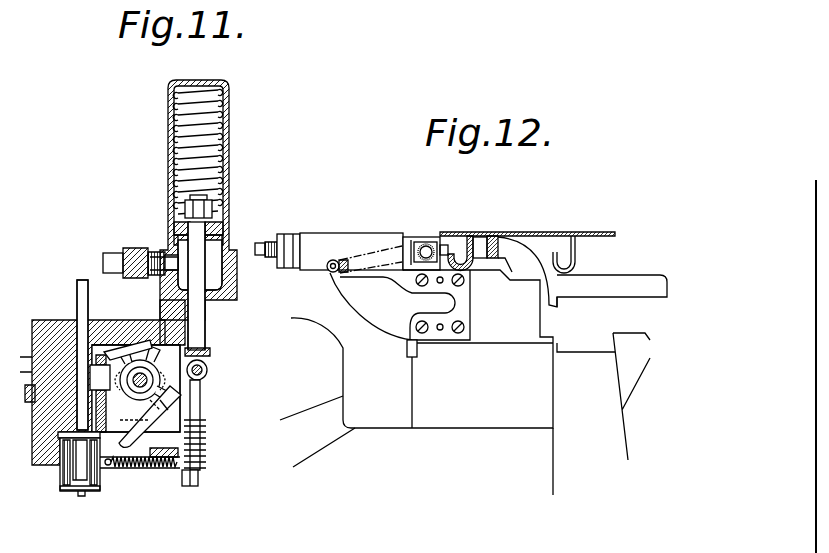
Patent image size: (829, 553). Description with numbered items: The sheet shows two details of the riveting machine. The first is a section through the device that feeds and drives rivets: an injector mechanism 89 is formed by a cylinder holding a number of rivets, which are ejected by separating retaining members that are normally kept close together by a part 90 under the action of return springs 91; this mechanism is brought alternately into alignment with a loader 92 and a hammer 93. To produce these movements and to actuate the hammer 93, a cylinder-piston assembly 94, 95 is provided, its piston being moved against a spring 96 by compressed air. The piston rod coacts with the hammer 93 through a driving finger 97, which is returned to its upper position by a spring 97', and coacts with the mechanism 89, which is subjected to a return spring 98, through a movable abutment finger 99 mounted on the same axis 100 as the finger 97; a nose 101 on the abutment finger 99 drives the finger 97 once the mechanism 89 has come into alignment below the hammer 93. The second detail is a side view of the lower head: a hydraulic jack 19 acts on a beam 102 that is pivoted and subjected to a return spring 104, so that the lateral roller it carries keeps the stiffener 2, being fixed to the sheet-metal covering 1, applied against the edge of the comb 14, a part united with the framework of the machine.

In FIG. 12, the sheet-metal covering 1 is at (560, 233).
In FIG. 12, the stiffener 2 is at (474, 242).
In FIG. 12, the comb 14 is at (511, 252).
In FIG. 12, the hydraulic jack 19 is at (353, 233).
In FIG. 11, the injector mechanism 89 is at (68, 487).
In FIG. 11, the part 90 is at (90, 488).
In FIG. 11, the return springs 91 is at (102, 480).
In FIG. 11, the loader 92 is at (88, 296).
In FIG. 11, the hammer 93 is at (90, 397).
In FIG. 11, the cylinder 94 is at (227, 170).
In FIG. 11, the piston 95 is at (223, 230).
In FIG. 11, the spring 96 is at (217, 132).
In FIG. 11, the driving finger 97 is at (139, 351).
In FIG. 11, the spring 97' is at (222, 367).
In FIG. 11, the return spring 98 is at (152, 468).
In FIG. 11, the movable abutment finger 99 is at (192, 434).
In FIG. 11, the axis 100 is at (187, 393).
In FIG. 11, the nose 101 is at (152, 348).
In FIG. 12, the beam 102 is at (437, 244).
In FIG. 12, the return spring 104 is at (334, 275).